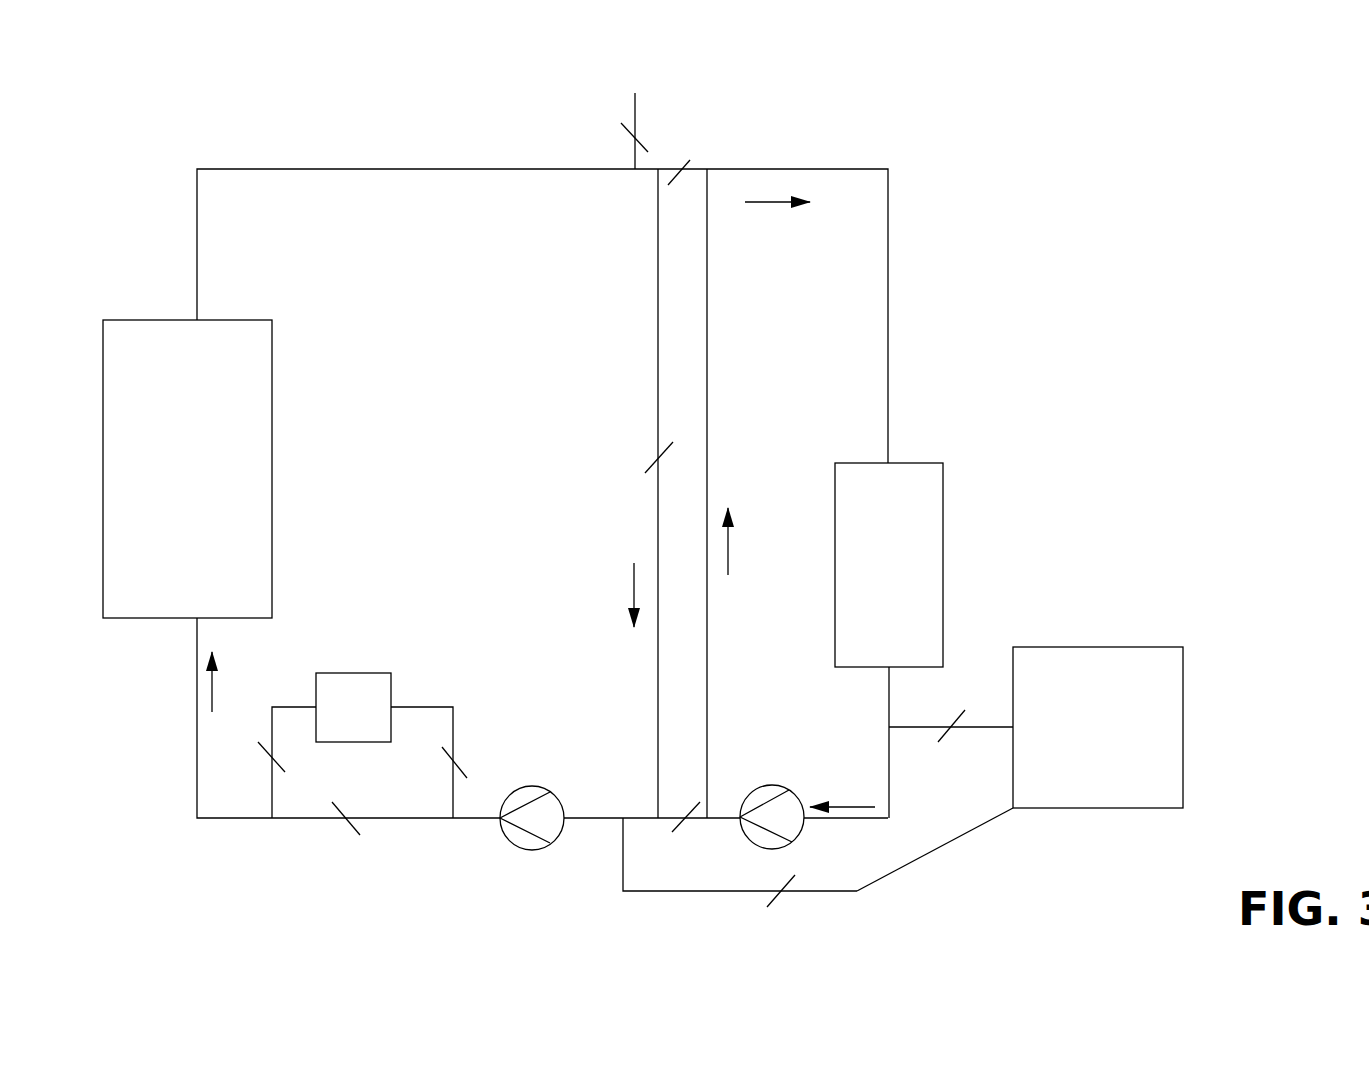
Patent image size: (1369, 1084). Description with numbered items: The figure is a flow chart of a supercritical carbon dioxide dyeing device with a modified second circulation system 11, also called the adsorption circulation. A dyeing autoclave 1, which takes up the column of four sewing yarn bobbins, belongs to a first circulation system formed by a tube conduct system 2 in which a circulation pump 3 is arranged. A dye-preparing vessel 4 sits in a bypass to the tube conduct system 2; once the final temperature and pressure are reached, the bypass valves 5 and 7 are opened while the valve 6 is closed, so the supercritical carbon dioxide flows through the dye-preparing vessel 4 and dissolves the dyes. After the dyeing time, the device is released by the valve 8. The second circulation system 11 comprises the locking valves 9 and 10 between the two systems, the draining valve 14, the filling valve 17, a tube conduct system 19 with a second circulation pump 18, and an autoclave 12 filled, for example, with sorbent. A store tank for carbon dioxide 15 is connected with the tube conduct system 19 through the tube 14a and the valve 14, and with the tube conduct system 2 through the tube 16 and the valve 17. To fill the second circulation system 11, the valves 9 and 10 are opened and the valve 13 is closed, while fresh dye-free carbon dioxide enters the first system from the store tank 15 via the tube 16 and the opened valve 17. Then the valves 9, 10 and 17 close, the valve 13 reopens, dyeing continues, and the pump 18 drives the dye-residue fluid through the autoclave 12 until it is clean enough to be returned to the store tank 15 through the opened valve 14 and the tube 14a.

The autoclave 1 is at (257, 412).
The tube conduct system 2 is at (658, 512).
The circulation pump 3 is at (548, 802).
The dye-preparing vessel 4 is at (385, 683).
The valve 5 is at (463, 763).
The valve 6 is at (347, 810).
The valve 7 is at (263, 762).
The valve 8 is at (645, 131).
The locking valve 9 is at (680, 158).
The locking valve 10 is at (688, 805).
The second circulation system 11 is at (870, 167).
The autoclave 12 is at (927, 555).
The valve 13 is at (657, 458).
The draining valve 14 is at (948, 715).
The tube 14a is at (963, 730).
The store tank for carbon dioxide 15 is at (1097, 647).
The tube 16 is at (873, 882).
The filling valve 17 is at (782, 900).
The second circulation pump 18 is at (793, 810).
The tube conduct system 19 is at (707, 328).